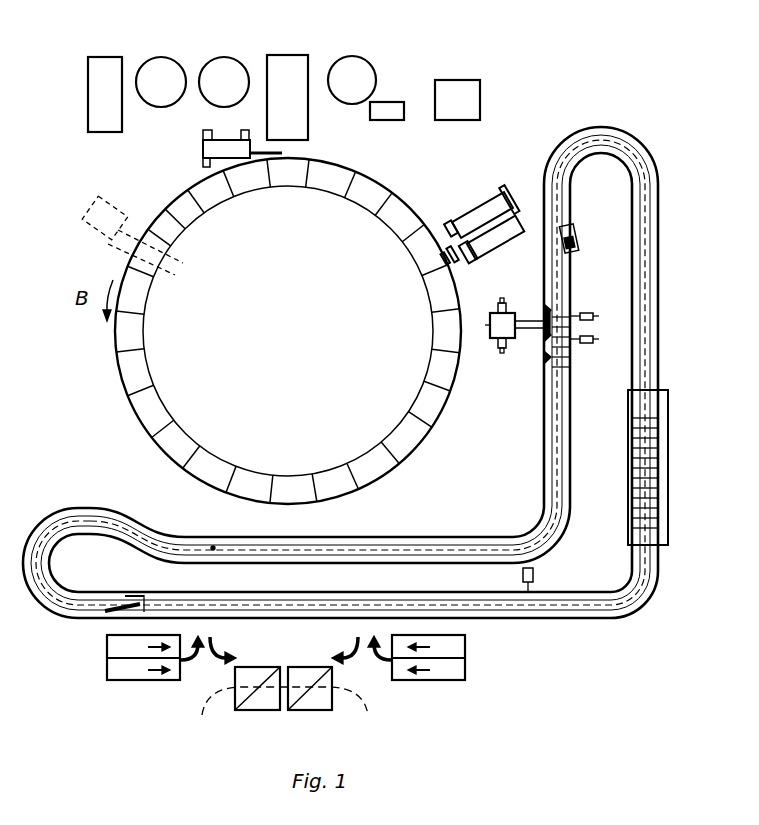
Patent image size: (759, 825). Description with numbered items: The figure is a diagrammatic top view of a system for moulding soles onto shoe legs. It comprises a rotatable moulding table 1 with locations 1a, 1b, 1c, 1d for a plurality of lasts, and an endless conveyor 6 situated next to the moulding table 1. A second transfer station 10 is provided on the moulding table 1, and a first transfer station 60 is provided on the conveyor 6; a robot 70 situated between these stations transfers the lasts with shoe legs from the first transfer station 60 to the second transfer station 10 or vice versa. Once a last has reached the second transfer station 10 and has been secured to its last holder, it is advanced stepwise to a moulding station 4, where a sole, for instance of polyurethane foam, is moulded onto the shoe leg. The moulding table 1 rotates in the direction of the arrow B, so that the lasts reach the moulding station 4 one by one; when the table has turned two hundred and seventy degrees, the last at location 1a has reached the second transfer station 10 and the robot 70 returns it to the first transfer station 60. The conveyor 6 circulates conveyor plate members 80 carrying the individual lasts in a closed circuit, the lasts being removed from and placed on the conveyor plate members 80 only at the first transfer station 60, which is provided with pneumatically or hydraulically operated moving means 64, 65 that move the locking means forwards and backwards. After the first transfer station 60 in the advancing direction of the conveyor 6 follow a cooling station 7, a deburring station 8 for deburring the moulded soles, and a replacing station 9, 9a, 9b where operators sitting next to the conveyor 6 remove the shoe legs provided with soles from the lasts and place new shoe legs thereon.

The rotatable moulding table 1 is at (128, 406).
The last location 1a is at (305, 170).
The last location 1b is at (252, 172).
The last location 1c is at (208, 187).
The last location 1d is at (175, 217).
The moulding station 4 is at (290, 78).
The endless conveyor 6 is at (368, 398).
The cooling station 7 is at (668, 457).
The deburring station 8 is at (538, 622).
The replacing station 9 is at (277, 620).
The replacing station 9a is at (366, 622).
The replacing station 9b is at (203, 623).
The second transfer station 10 is at (458, 315).
The first transfer station 60 is at (548, 340).
The moving means 64 is at (595, 342).
The moving means 65 is at (590, 312).
The robot 70 is at (513, 308).
The conveyor plate member 80 is at (552, 312).